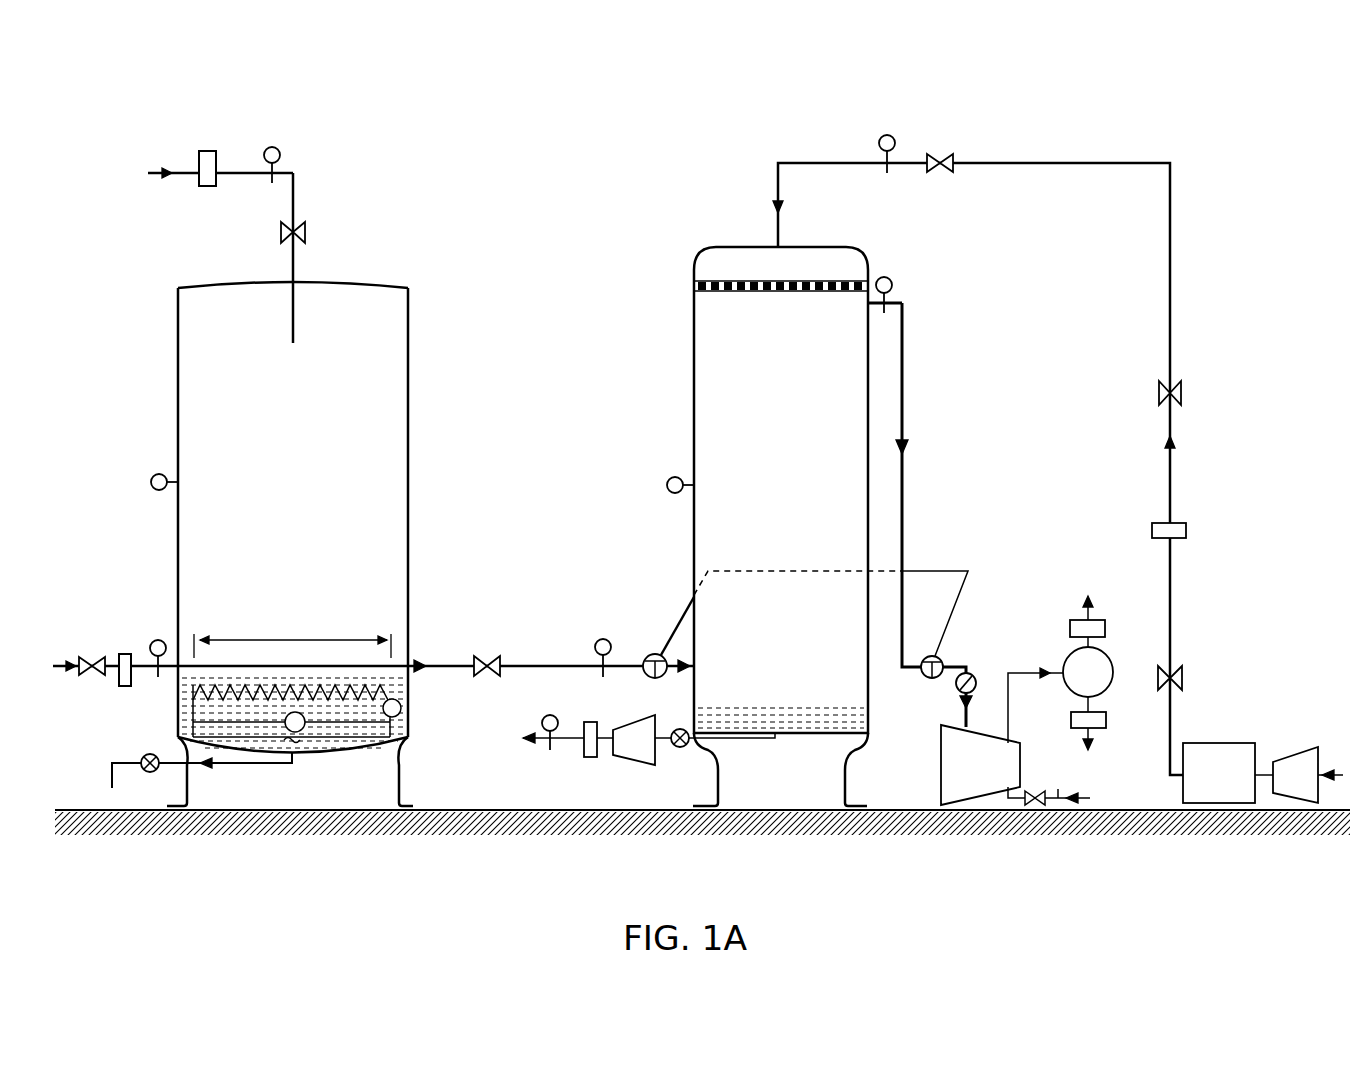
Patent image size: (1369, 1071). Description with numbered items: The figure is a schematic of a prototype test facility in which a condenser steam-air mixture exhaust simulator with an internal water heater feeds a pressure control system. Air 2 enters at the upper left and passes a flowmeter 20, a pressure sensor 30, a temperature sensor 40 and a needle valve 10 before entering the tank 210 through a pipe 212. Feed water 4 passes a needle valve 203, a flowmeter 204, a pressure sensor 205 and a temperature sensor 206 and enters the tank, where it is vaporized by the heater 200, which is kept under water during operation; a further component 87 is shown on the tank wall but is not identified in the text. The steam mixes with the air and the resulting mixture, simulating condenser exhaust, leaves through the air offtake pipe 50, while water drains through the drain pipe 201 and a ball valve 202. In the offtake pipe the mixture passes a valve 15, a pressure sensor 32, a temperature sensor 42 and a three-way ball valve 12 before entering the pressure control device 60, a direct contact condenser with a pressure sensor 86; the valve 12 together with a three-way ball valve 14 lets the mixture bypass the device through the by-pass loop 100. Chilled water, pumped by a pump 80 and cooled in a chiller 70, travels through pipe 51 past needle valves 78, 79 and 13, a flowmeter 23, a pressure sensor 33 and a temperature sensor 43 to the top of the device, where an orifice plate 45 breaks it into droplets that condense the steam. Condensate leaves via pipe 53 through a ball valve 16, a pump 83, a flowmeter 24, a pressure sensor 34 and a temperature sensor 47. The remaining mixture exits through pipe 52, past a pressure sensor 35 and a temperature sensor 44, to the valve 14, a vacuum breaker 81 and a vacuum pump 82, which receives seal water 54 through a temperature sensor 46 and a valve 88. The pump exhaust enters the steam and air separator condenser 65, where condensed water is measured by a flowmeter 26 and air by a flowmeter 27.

The air 2 is at (220, 162).
The flowmeter 20 is at (207, 153).
The pressure sensor 30 is at (273, 145).
The temperature sensor 40 is at (273, 189).
The needle valve 10 is at (308, 232).
The pipe 212 is at (303, 261).
The tank 210 is at (322, 466).
The level/temperature sensor 87 is at (151, 481).
The feed water 4 is at (112, 657).
The needle valve 203 is at (93, 680).
The flowmeter 204 is at (120, 656).
The pressure sensor 205 is at (158, 640).
The temperature sensor 206 is at (157, 684).
The air offtake pipe 50 is at (429, 656).
The heater 200 is at (351, 708).
The drain pipe 201 is at (202, 770).
The ball valve 202 is at (152, 775).
The valve 15 is at (486, 679).
The pressure sensor 32 is at (603, 640).
The temperature sensor 42 is at (603, 684).
The 3-way ball valve 12 is at (653, 651).
The by-pass loop 100 is at (671, 616).
The pressure control device 60 is at (744, 451).
The orifice plate 45 is at (746, 272).
The pressure sensor 86 is at (664, 484).
The pipe 51 is at (978, 456).
The pressure sensor 33 is at (887, 135).
The temperature sensor 43 is at (890, 181).
The needle valve 13 is at (940, 147).
The pressure sensor 35 is at (884, 282).
The temperature sensor 44 is at (885, 320).
The pipe 52 is at (934, 515).
The 3-way ball valve 14 is at (927, 654).
The vacuum breaker 81 is at (981, 685).
The vacuum pump 82 is at (967, 765).
The steam and air separator condenser 65 is at (1074, 695).
The flowmeter 27 is at (1105, 621).
The flowmeter 26 is at (1106, 723).
The seal water 54 is at (1062, 798).
The valve 88 is at (1037, 788).
The temperature sensor 46 is at (1062, 784).
The needle valve 79 is at (1191, 414).
The flowmeter 23 is at (1185, 531).
The needle valve 78 is at (1188, 678).
The chiller 70 is at (1228, 758).
The pump 80 is at (1308, 767).
The pipe 53 is at (715, 748).
The ball valve 16 is at (682, 750).
The pump 83 is at (634, 751).
The temperature sensor 47 is at (568, 754).
The flowmeter 24 is at (592, 751).
The pressure sensor 34 is at (550, 720).